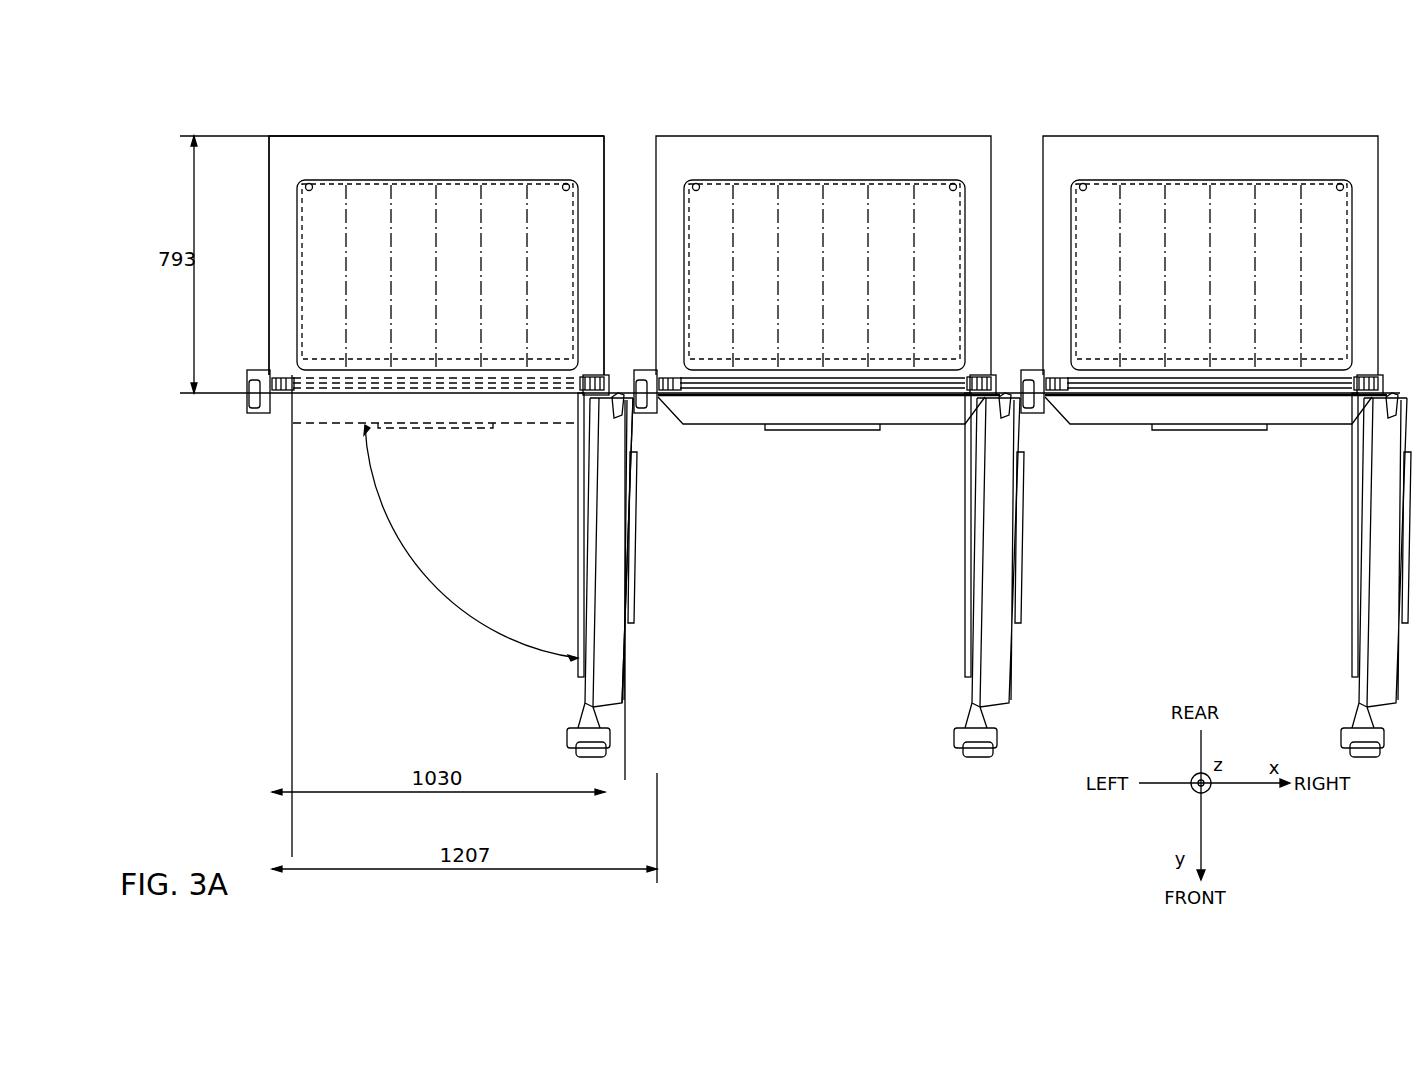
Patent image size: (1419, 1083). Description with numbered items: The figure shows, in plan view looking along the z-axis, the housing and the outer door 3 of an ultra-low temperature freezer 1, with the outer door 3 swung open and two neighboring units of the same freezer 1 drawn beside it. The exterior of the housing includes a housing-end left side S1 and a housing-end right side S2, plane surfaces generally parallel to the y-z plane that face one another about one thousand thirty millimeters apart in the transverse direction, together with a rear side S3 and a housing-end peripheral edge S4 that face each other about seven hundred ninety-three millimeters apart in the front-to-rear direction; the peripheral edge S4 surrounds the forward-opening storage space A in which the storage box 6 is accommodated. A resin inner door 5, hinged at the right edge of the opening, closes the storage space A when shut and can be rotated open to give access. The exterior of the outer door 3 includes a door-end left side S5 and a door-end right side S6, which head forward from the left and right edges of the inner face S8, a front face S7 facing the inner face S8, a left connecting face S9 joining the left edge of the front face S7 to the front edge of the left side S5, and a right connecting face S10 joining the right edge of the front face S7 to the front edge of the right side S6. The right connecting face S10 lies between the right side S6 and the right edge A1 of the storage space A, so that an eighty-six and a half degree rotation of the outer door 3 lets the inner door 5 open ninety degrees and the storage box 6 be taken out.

The ultra-low temperature freezer 1 is at (418, 116).
The outer door 3 is at (422, 440).
The inner door 5 is at (368, 378).
The storage box 6 is at (456, 185).
The storage space A is at (500, 181).
The right edge of storage space A1 is at (578, 235).
The housing-end left side S1 is at (268, 212).
The housing-end right side S2 is at (604, 238).
The rear side S3 is at (546, 135).
The housing-end peripheral edge S4 is at (290, 376).
The door-end left side S5 is at (298, 394).
The door-end right side S6 is at (577, 403).
The front face S7 is at (505, 425).
The inner face S8 is at (320, 388).
The left connecting face S9 is at (275, 420).
The right connecting face S10 is at (593, 420).